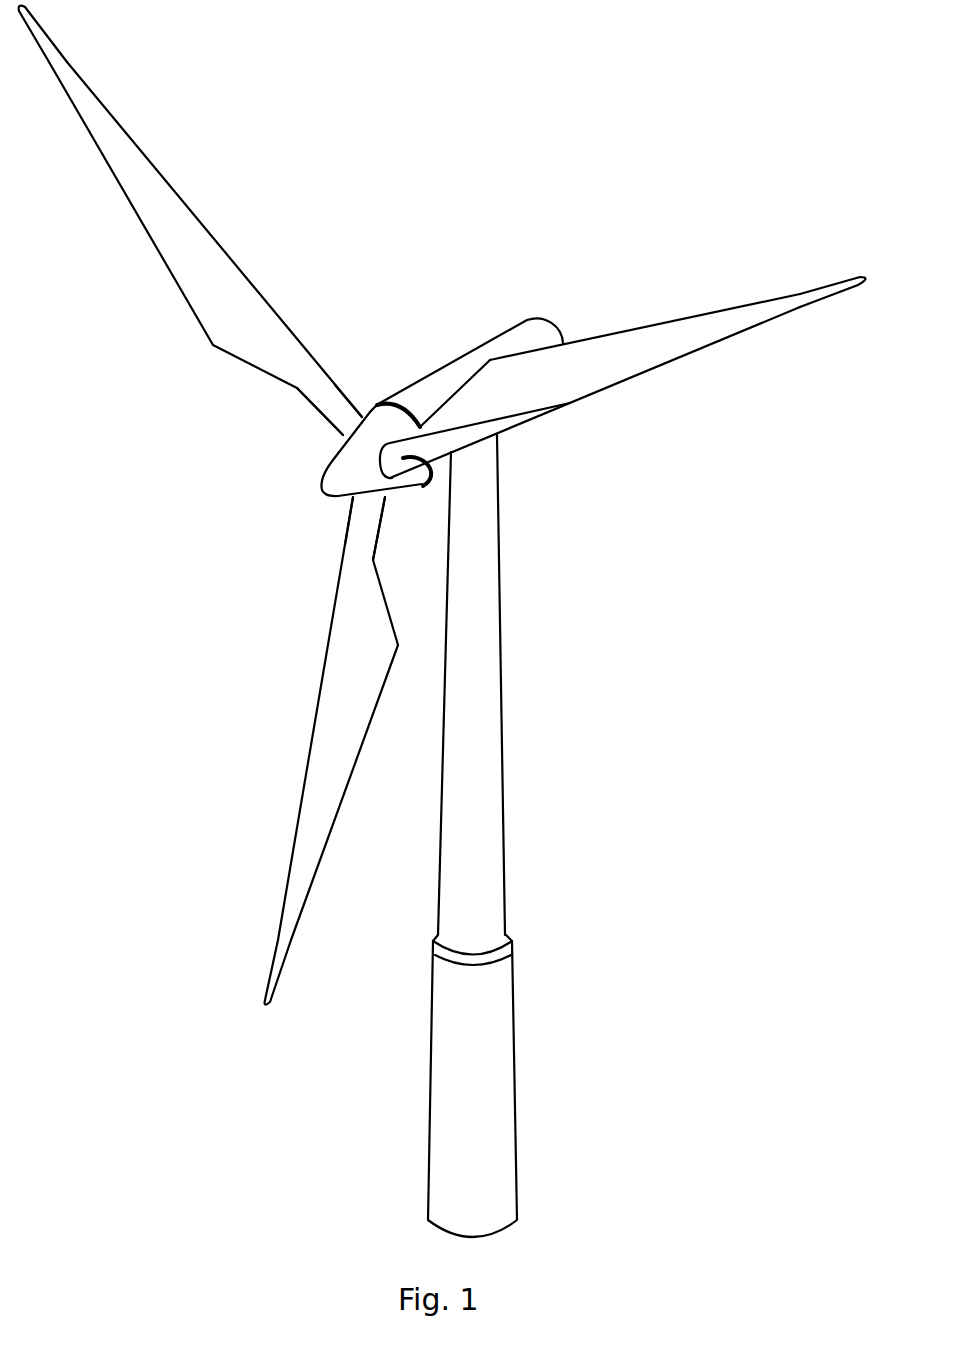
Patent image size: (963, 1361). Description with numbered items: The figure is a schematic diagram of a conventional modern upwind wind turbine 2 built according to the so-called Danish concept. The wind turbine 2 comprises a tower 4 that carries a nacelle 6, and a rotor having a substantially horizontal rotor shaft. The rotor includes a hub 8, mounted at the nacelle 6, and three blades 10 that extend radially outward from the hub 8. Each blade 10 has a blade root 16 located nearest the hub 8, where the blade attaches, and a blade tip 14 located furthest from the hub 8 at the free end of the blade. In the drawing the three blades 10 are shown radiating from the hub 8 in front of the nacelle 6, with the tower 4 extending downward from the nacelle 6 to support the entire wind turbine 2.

The wind turbine 2 is at (442, 621).
The tower 4 is at (490, 694).
The nacelle 6 is at (432, 383).
The hub 8 is at (338, 470).
The blade 10 is at (442, 507).
The blade tip 14 is at (62, 65).
The blade root 16 is at (348, 422).